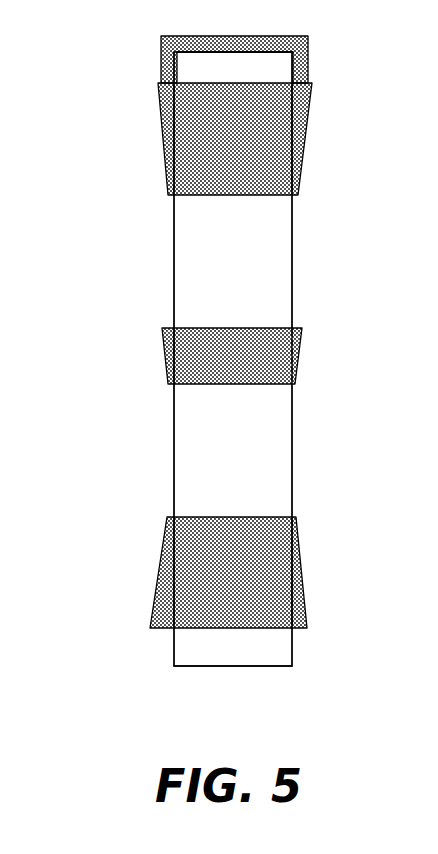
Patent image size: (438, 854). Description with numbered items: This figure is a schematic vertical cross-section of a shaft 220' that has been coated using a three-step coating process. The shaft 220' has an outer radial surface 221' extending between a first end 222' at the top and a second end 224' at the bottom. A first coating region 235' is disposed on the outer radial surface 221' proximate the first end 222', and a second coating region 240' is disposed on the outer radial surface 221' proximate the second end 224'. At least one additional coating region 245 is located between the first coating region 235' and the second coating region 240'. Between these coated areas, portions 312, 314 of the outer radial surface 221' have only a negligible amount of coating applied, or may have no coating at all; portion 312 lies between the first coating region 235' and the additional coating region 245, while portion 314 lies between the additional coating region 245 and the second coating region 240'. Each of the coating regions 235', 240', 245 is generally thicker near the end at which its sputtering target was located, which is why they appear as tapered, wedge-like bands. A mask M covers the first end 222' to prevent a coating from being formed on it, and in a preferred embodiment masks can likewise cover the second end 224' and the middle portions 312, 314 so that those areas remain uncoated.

The mask M is at (308, 53).
The shaft 220' is at (300, 359).
The outer radial surface 221' is at (129, 359).
The first end 222' is at (199, 99).
The second end 224' is at (241, 708).
The first coating region 235' is at (276, 141).
The second coating region 240' is at (270, 573).
The additional coating region 245 is at (148, 323).
The portion of outer radial surface 312 is at (292, 264).
The portion of outer radial surface 314 is at (292, 459).